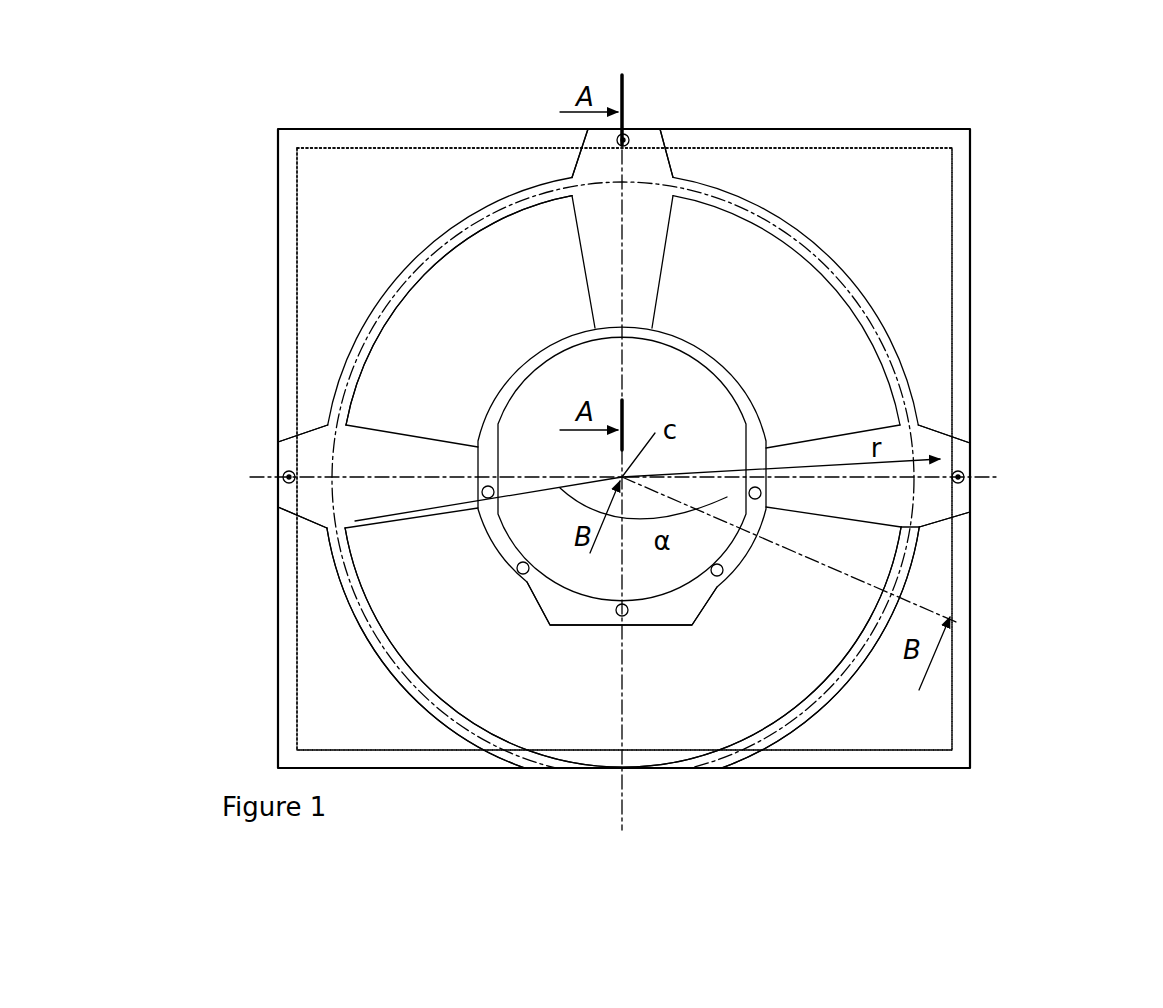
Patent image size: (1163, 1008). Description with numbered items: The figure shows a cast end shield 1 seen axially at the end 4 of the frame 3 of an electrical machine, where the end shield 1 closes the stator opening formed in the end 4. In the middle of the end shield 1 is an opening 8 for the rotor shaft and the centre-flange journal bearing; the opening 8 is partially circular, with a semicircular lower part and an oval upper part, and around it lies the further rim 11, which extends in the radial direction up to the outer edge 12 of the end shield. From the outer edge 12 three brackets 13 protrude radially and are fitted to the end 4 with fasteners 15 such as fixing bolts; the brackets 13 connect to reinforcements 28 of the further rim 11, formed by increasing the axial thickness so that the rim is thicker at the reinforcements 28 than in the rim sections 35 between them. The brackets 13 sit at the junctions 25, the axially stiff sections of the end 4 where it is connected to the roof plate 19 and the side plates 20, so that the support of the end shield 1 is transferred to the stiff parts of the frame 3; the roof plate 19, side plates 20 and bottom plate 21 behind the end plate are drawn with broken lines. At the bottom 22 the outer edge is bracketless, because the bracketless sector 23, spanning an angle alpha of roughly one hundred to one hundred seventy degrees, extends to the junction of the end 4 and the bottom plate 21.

The end shield 1 is at (753, 336).
The frame 3 is at (972, 222).
The end 4 is at (838, 192).
The opening 8 is at (567, 587).
The further rim 11 is at (390, 372).
The outer edge 12 is at (920, 543).
The brackets 13 is at (600, 157).
The fastener 15 is at (630, 140).
The roof plate 19 is at (367, 132).
The side plates 20 is at (288, 207).
The bottom plate 21 is at (312, 753).
The bottom 22 is at (537, 743).
The bracketless sector 23 is at (734, 674).
The junctions 25 is at (603, 138).
The reinforcements 28 is at (658, 232).
The rim sections 35 is at (499, 314).